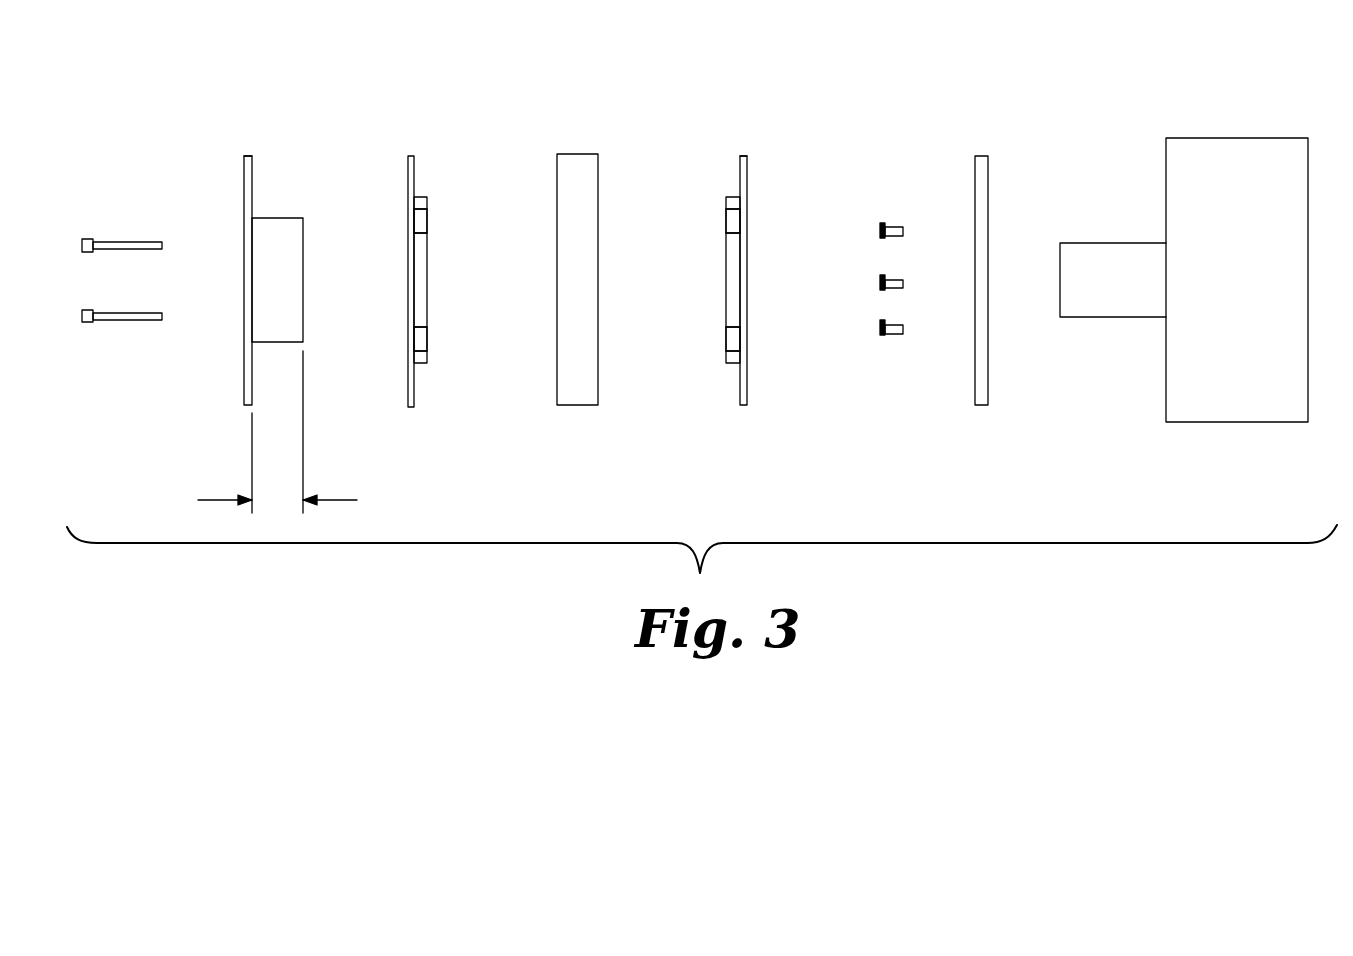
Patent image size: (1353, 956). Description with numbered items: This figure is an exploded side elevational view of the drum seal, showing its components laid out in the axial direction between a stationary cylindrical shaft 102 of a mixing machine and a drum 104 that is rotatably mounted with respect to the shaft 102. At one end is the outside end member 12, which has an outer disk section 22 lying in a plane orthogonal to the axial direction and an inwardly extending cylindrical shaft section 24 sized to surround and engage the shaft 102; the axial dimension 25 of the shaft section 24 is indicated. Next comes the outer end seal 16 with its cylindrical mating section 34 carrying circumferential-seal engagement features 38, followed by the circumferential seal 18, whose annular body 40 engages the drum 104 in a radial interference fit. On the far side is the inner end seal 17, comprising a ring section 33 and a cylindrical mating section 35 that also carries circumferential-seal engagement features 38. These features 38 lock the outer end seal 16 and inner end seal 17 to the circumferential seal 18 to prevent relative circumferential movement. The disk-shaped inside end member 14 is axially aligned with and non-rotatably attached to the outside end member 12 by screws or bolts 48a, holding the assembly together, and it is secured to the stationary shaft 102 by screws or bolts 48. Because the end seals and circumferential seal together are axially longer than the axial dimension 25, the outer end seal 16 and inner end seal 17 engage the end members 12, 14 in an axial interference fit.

The outside end member 12 is at (245, 398).
The inside end member 14 is at (981, 408).
The outer end seal 16 is at (412, 408).
The inner end seal 17 is at (743, 408).
The circumferential seal 18 is at (576, 316).
The outer disk section 22 is at (250, 162).
The inwardly extending cylindrical shaft section 24 is at (278, 230).
The axial dimension 25 is at (277, 432).
The ring section 33 is at (747, 170).
The cylindrical mating section 34 is at (422, 271).
The cylindrical mating section 35 is at (731, 271).
The circumferential-seal engagement features 38 is at (422, 224).
The annular body 40 is at (582, 184).
The screws or bolts 48 is at (132, 364).
The screws or bolts 48a is at (895, 226).
The cylindrical shaft 102 is at (1128, 300).
The drum 104 is at (1215, 150).